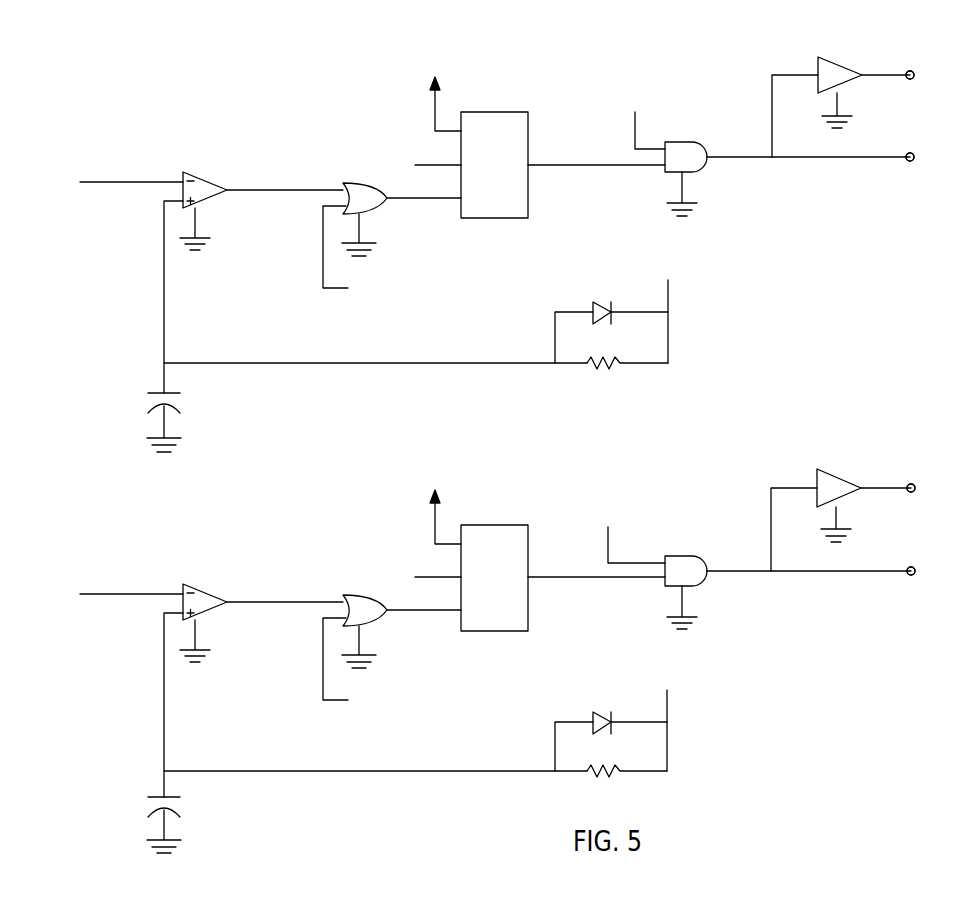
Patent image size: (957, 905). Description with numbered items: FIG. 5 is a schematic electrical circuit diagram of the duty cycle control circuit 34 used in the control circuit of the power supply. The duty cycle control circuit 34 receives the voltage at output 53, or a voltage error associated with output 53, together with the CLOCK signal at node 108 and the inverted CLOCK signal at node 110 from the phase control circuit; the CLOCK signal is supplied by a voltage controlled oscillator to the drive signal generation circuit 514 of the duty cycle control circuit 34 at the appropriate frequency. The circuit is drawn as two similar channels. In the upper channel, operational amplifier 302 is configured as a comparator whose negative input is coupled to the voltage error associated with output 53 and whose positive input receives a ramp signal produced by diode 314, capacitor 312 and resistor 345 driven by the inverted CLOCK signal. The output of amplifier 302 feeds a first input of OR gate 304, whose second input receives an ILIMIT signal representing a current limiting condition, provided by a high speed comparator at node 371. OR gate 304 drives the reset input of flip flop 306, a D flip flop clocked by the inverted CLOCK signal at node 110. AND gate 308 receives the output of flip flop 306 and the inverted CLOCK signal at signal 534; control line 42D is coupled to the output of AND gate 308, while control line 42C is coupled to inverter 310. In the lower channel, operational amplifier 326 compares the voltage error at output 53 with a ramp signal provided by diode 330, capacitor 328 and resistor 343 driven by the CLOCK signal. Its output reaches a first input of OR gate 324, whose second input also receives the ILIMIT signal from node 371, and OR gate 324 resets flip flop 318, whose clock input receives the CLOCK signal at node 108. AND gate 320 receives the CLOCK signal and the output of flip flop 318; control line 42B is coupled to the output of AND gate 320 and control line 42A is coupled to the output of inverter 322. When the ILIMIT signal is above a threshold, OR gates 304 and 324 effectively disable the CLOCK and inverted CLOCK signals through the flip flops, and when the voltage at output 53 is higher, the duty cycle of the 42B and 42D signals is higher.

The output 53 is at (95, 181).
The operational amplifier 302 is at (213, 200).
The OR gate 304 is at (357, 181).
The flip flop 306 is at (506, 112).
The AND gate 308 is at (683, 141).
The inverter 310 is at (840, 63).
The capacitor 312 is at (155, 391).
The diode 314 is at (600, 300).
The flip flop 318 is at (506, 525).
The AND gate 320 is at (683, 554).
The inverter 322 is at (840, 477).
The OR gate 324 is at (357, 594).
The operational amplifier 326 is at (213, 612).
The capacitor 328 is at (155, 795).
The diode 330 is at (600, 710).
The resistor 343 is at (615, 772).
The resistor 345 is at (615, 364).
The node 371 is at (330, 289).
The node 110 is at (427, 163).
The node 108 is at (427, 575).
The control signal 534 is at (635, 128).
The drive signal generation circuit 514 is at (793, 56).
The control line 42A is at (886, 492).
The control line 42B is at (886, 574).
The control line 42C is at (886, 78).
The control line 42D is at (886, 160).
The duty cycle control circuit 34 is at (895, 730).